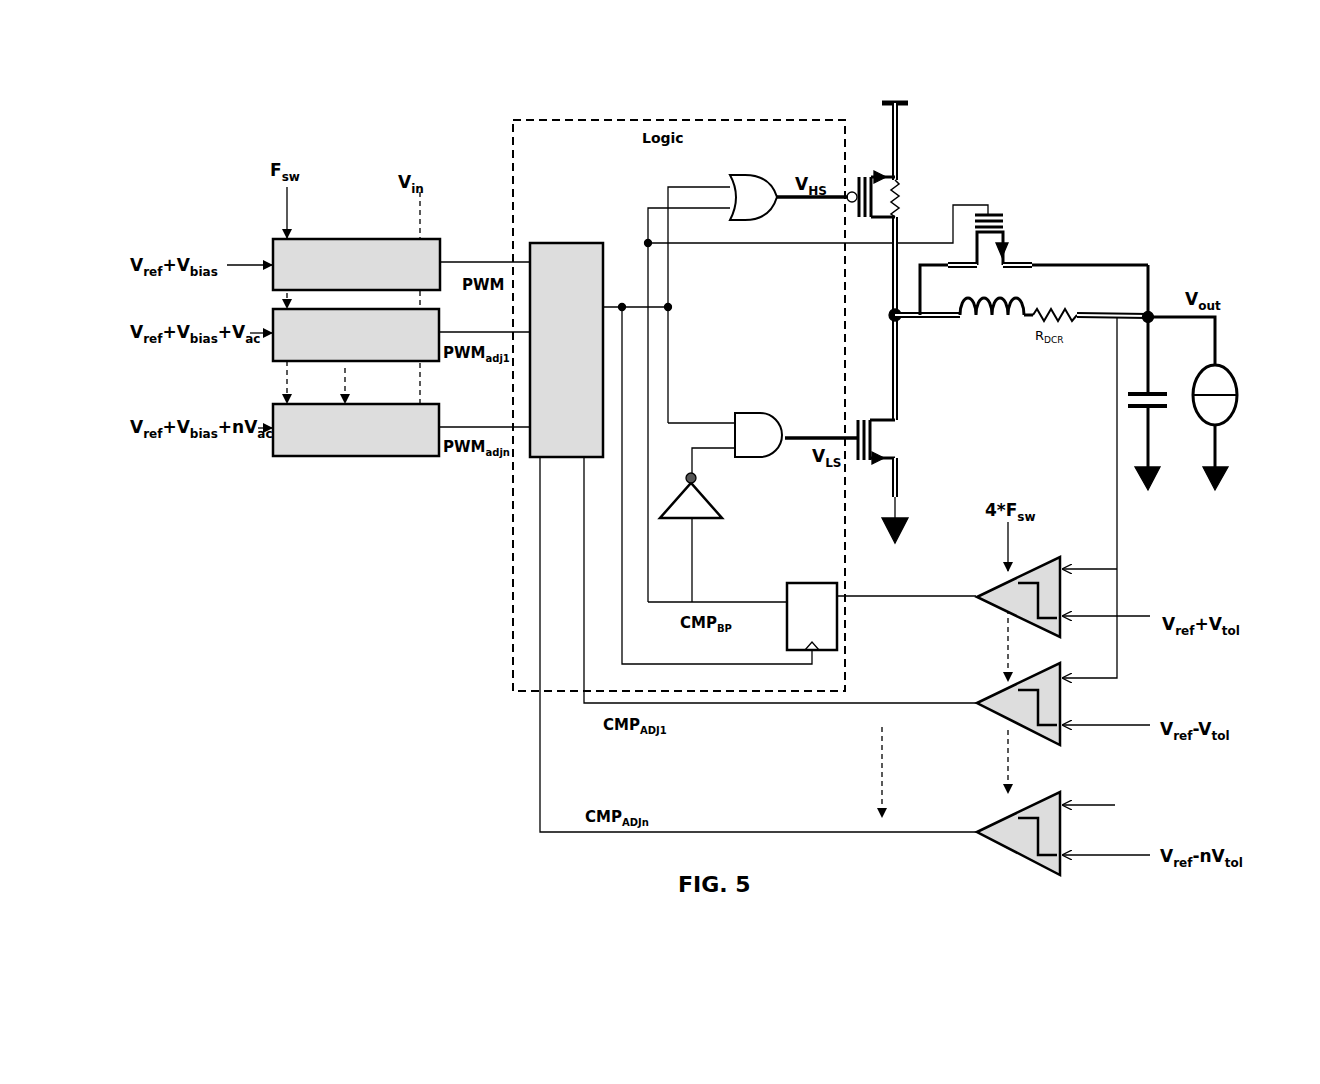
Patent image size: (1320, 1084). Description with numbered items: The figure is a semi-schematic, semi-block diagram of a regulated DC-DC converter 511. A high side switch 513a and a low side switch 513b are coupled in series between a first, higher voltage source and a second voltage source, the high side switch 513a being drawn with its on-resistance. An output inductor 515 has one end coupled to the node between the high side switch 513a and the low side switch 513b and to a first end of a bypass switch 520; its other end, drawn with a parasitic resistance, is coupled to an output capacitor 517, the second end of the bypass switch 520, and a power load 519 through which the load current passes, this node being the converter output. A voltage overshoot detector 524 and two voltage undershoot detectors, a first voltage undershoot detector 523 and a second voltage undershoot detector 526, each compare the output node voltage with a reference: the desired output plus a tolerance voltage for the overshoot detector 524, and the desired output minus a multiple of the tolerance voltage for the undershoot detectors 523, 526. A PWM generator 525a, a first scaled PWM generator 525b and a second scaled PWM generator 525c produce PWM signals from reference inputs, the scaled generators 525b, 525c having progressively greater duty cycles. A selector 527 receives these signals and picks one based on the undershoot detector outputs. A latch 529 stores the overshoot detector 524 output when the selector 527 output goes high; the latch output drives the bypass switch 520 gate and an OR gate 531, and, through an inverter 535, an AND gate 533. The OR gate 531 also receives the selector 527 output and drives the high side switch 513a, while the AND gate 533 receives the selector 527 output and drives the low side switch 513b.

The converter 511 is at (951, 116).
The high side switch 513a is at (863, 173).
The low side switch 513b is at (860, 414).
The output inductor 515 is at (977, 338).
The output capacitor 517 is at (1142, 388).
The power load 519 is at (1230, 367).
The bypass switch 520 is at (1007, 222).
The first voltage undershoot detector 523 is at (1040, 735).
The voltage overshoot detector 524 is at (1030, 568).
The PWM generator 525a is at (431, 238).
The first scaled PWM generator 525b is at (440, 314).
The second scaled PWM generator 525c is at (440, 407).
The second voltage undershoot detector 526 is at (1000, 860).
The selector 527 is at (548, 241).
The latch 529 is at (807, 579).
The OR gate 531 is at (753, 173).
The AND gate 533 is at (752, 413).
The inverter 535 is at (712, 502).